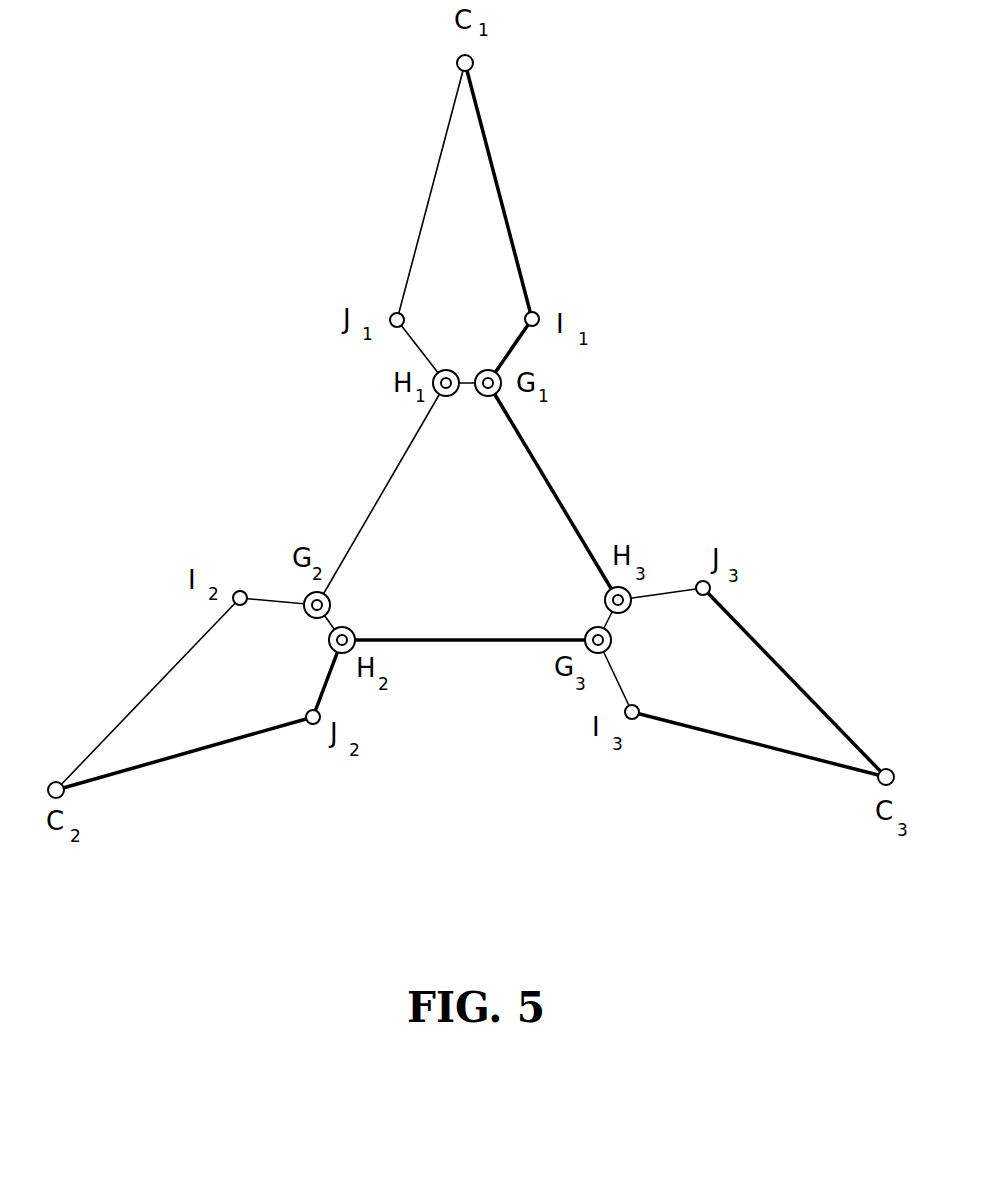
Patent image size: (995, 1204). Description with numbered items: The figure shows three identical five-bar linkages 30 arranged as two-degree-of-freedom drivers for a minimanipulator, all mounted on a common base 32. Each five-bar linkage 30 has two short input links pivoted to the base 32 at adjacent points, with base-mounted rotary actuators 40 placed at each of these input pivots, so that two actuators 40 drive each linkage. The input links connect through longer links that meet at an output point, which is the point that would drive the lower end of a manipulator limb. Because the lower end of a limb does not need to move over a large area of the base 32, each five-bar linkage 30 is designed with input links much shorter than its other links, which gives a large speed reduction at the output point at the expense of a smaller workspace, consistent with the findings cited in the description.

The five-bar linkage 30 is at (517, 218).
The base 32 is at (487, 528).
The base-mounted rotary actuator 40 is at (447, 397).